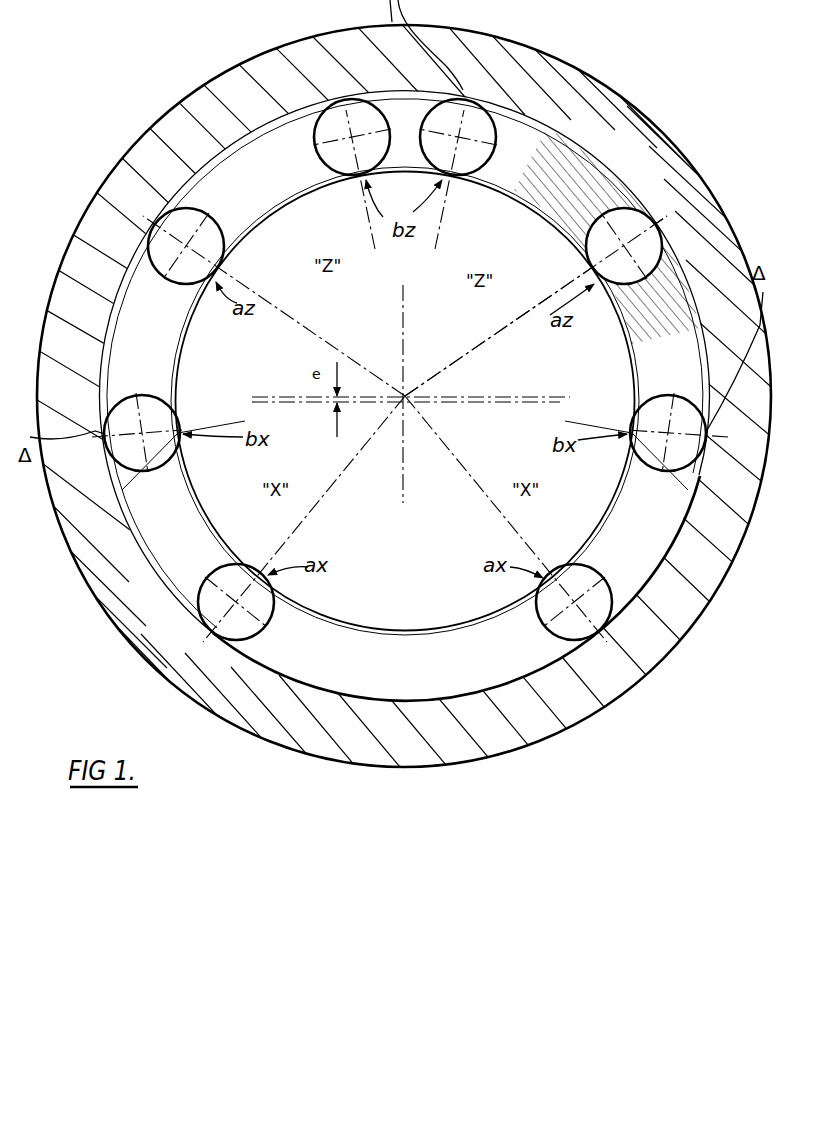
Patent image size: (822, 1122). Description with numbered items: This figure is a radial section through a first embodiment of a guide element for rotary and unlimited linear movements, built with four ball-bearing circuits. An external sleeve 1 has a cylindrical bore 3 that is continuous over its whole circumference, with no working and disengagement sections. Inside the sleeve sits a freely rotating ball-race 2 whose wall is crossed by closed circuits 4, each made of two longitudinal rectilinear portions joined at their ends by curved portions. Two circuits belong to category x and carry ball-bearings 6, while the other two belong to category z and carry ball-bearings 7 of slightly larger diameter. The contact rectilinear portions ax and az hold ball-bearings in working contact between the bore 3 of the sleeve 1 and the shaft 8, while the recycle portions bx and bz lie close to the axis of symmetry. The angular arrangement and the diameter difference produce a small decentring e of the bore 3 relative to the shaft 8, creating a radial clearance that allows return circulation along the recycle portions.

The external sleeve 1 is at (217, 120).
The ball-race 2 is at (145, 320).
The cylindrical bore 3 is at (603, 163).
The closed circuits 4 is at (377, 358).
The ball-bearings 6 is at (157, 458).
The ball-bearings 7 is at (346, 152).
The shaft 8 is at (430, 555).